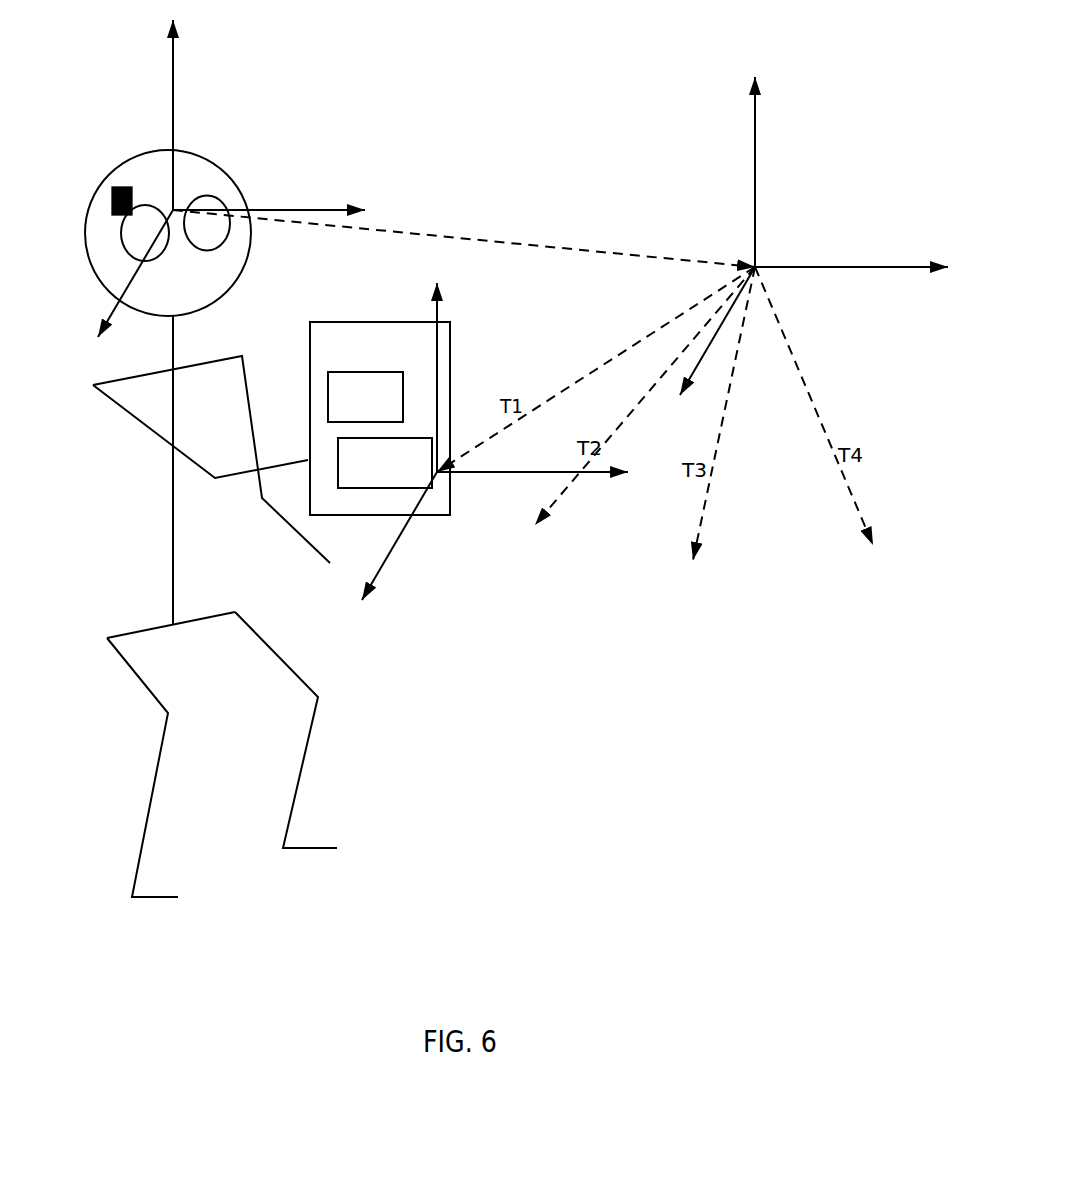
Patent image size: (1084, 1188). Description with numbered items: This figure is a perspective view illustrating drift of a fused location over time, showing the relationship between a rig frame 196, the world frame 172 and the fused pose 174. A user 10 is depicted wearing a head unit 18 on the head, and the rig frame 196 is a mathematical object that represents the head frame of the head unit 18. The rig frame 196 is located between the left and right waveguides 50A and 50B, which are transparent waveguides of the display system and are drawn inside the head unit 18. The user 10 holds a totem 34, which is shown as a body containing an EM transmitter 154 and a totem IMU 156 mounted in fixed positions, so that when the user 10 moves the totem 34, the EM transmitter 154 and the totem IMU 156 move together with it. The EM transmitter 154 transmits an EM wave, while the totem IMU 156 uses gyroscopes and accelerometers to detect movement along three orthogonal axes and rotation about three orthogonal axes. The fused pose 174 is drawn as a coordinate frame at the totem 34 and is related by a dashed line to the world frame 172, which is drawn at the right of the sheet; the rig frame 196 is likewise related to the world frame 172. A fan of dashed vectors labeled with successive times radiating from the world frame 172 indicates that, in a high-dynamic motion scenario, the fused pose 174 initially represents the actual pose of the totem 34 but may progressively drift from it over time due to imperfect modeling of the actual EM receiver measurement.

The user 10 is at (110, 382).
The head unit 18 is at (208, 190).
The left waveguide 50A is at (232, 230).
The right waveguide 50B is at (165, 255).
The rig frame 196 is at (231, 178).
The world frame 172 is at (560, 236).
The fused pose 174 is at (558, 446).
The totem 34 is at (380, 418).
The EM transmitter 154 is at (365, 397).
The totem IMU 156 is at (385, 463).